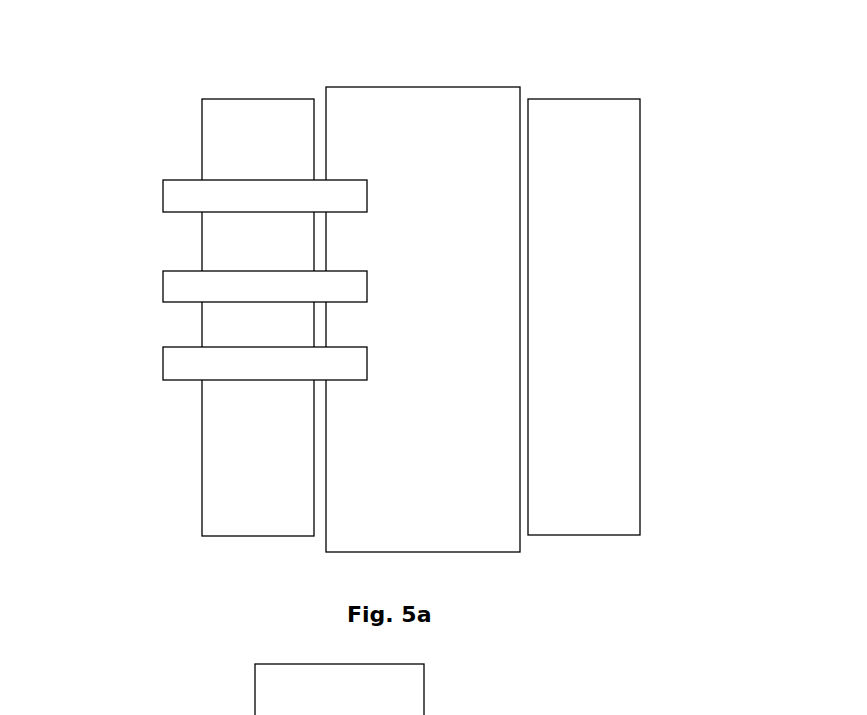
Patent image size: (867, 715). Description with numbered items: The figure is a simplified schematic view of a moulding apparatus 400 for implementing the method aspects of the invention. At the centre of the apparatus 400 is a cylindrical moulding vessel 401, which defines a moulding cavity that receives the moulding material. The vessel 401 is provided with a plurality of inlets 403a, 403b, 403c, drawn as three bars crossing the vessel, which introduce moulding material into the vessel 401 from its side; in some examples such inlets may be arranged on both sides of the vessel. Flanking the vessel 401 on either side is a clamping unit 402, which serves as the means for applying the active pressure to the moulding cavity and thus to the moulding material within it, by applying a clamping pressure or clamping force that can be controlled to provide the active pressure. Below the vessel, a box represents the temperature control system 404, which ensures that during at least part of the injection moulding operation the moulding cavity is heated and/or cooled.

The moulding apparatus 400 is at (392, 367).
The cylindrical moulding vessel 401 is at (443, 179).
The clamping unit 402 is at (592, 227).
The inlet 403a is at (178, 192).
The inlet 403b is at (178, 285).
The inlet 403c is at (178, 362).
The temperature control system 404 is at (339, 689).